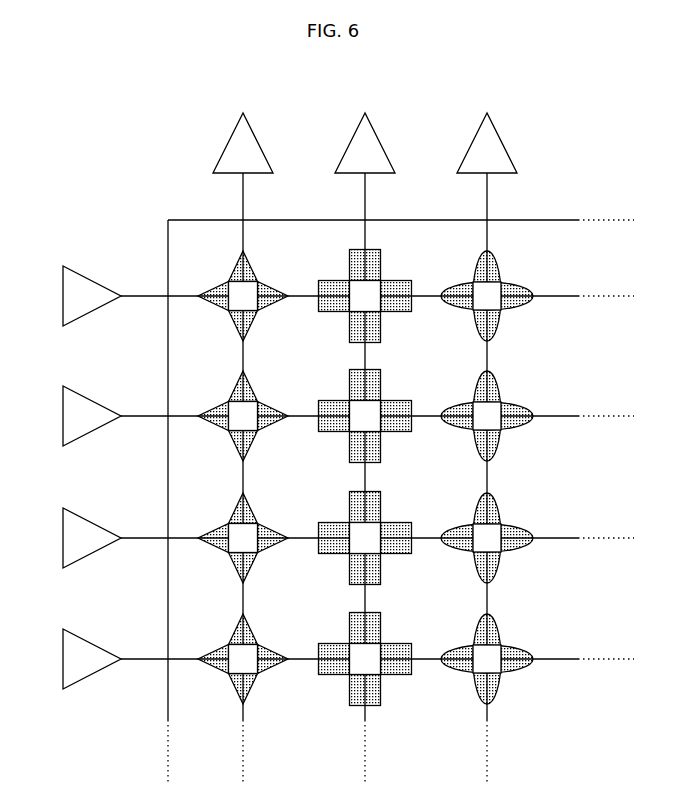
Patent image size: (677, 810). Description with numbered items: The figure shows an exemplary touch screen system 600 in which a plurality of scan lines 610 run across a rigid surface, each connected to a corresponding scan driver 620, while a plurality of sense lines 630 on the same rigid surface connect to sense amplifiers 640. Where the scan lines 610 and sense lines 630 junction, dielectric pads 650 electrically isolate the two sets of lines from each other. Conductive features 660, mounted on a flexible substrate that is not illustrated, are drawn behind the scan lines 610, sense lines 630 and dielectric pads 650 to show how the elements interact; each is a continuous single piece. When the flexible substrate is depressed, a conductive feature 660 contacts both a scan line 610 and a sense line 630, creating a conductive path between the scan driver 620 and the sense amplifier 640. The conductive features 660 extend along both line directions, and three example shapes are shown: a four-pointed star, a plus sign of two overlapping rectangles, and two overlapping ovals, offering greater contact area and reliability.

The touch screen system 600 is at (136, 153).
The scan lines 610 is at (135, 297).
The scan drivers 620 is at (88, 434).
The sense lines 630 is at (365, 217).
The sense amplifiers 640 is at (464, 158).
The dielectric pads 650 is at (503, 672).
The conductive features 660 is at (268, 426).